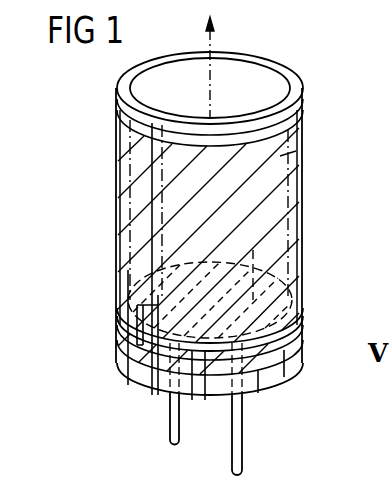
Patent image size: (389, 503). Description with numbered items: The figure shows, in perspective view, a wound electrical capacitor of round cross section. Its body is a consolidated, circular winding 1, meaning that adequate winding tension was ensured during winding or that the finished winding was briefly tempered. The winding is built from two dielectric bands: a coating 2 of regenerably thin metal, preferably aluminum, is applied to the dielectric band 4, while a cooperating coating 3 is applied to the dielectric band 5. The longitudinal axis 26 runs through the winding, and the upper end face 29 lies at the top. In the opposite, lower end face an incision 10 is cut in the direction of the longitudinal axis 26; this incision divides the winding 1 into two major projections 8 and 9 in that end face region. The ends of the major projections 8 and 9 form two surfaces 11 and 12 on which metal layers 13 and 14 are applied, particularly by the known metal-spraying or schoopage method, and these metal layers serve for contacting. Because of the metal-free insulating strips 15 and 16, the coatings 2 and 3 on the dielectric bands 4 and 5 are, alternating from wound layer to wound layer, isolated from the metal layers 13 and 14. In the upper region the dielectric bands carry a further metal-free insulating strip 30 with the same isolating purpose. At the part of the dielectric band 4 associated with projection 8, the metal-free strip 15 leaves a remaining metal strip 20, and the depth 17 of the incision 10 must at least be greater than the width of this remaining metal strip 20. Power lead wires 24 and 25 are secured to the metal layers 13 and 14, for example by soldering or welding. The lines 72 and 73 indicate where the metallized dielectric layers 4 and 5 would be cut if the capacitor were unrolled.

The winding 1 is at (306, 198).
The coating 2 is at (114, 172).
The coating 3 is at (296, 153).
The dielectric band 4 is at (299, 81).
The dielectric band 5 is at (285, 78).
The major projection 8 is at (187, 375).
The major projection 9 is at (118, 324).
The incision 10 is at (150, 372).
The surface 11 is at (284, 377).
The surface 12 is at (120, 342).
The metal layer 13 is at (260, 383).
The metal layer 14 is at (122, 364).
The metal-free insulating strip 15 is at (303, 318).
The metal-free insulating strip 16 is at (128, 275).
The depth 17 is at (140, 378).
The remaining metal strip 20 is at (214, 398).
The power lead wire 24 is at (243, 466).
The power lead wire 25 is at (170, 437).
The longitudinal axis 26 is at (214, 41).
The upper end face 29 is at (252, 97).
The metal-free insulating strip 30 is at (226, 115).
The line 72 is at (160, 242).
The line 73 is at (164, 182).